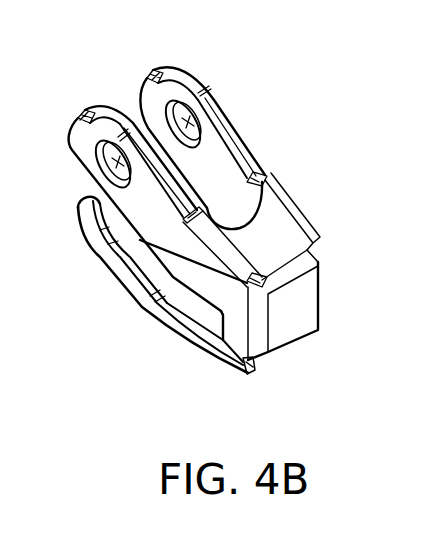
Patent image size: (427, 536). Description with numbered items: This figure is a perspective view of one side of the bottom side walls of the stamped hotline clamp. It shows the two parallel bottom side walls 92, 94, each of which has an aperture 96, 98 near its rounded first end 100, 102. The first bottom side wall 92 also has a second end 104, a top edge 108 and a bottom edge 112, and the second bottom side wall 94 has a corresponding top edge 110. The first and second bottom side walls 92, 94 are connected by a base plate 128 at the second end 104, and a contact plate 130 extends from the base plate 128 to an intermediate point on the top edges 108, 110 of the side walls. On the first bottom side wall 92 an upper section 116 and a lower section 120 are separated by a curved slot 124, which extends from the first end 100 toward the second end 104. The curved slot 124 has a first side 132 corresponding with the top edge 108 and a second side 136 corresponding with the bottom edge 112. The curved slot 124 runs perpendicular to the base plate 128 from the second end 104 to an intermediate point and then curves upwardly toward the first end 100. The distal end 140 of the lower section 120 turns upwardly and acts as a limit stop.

The bottom side wall 92 is at (82, 142).
The bottom side wall 94 is at (198, 74).
The aperture 96 is at (98, 165).
The aperture 98 is at (218, 120).
The first end 100 is at (86, 112).
The first end 102 is at (153, 71).
The second end 104 is at (251, 371).
The top edge 108 is at (123, 112).
The top edge 110 is at (226, 148).
The bottom edge 112 is at (172, 333).
The upper section 116 is at (205, 305).
The lower section 120 is at (122, 275).
The curved slot 124 is at (138, 252).
The base plate 128 is at (296, 302).
The contact plate 130 is at (273, 236).
The first side 132 is at (183, 291).
The second side 136 is at (202, 335).
The distal end 140 is at (82, 205).